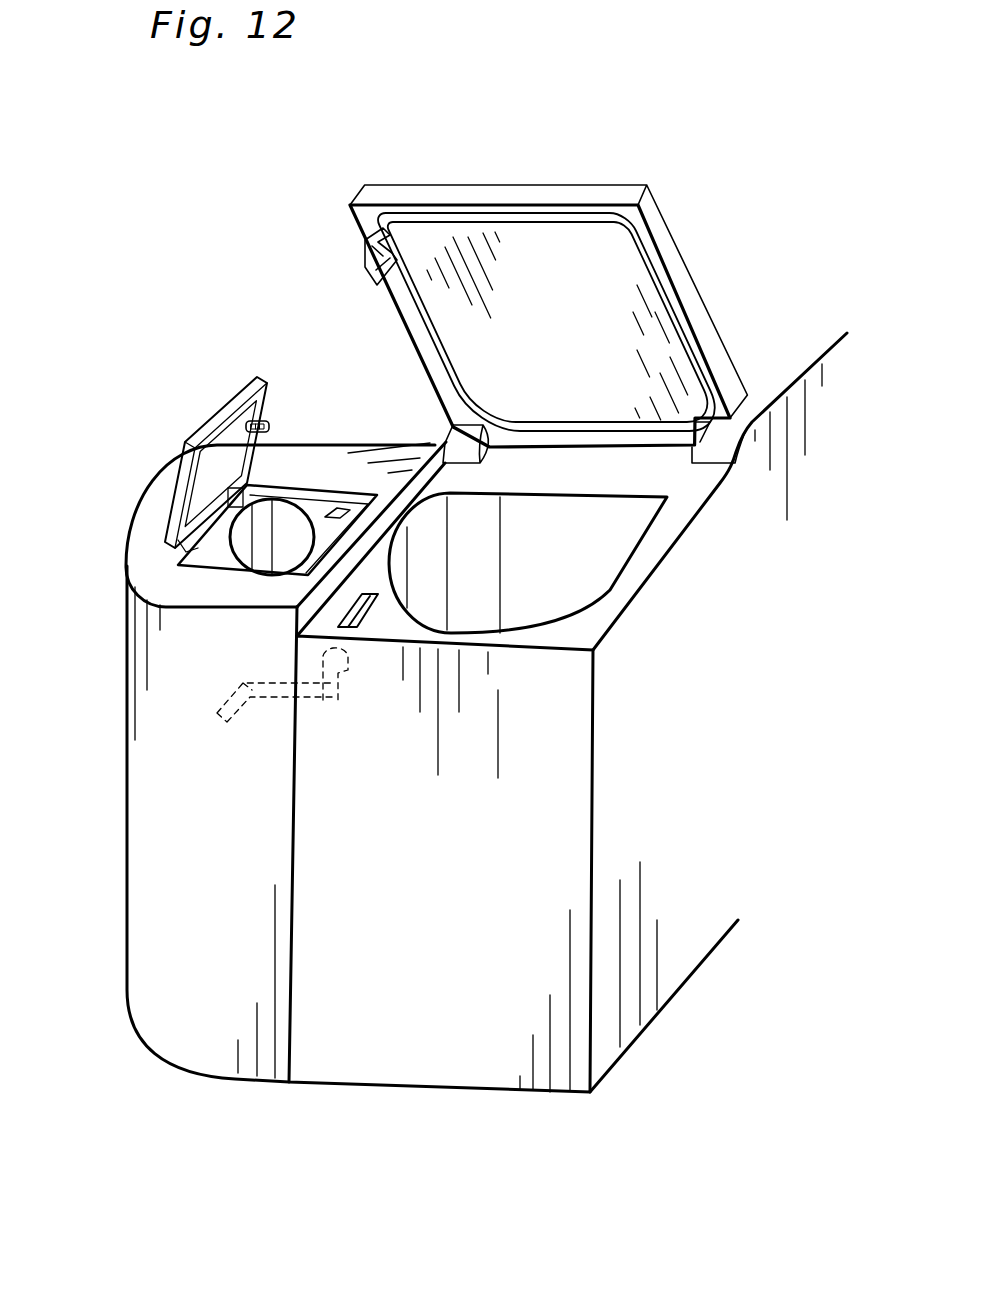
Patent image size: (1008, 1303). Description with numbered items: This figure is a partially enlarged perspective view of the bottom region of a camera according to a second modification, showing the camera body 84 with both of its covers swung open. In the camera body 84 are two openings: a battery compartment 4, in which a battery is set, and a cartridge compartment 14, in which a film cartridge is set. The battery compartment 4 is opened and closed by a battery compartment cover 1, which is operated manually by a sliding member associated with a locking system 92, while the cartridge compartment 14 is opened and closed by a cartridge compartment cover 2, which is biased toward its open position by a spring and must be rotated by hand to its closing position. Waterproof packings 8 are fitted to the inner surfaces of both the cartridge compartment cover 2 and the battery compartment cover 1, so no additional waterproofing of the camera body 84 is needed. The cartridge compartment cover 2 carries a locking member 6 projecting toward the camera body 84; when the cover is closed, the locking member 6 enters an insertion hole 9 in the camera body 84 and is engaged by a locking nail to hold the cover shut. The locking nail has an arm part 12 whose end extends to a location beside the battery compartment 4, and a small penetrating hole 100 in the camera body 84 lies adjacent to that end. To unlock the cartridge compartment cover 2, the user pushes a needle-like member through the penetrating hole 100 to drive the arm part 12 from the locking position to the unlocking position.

The battery compartment cover 1 is at (207, 427).
The cartridge compartment cover 2 is at (630, 275).
The battery compartment 4 is at (247, 550).
The locking member 6 is at (376, 270).
The waterproof packing 8 is at (248, 420).
The insertion hole 9 is at (352, 613).
The arm part 12 is at (330, 703).
The cartridge compartment 14 is at (604, 582).
The camera body 84 is at (680, 937).
The locking system 92 is at (340, 507).
The penetrating hole 100 is at (245, 703).